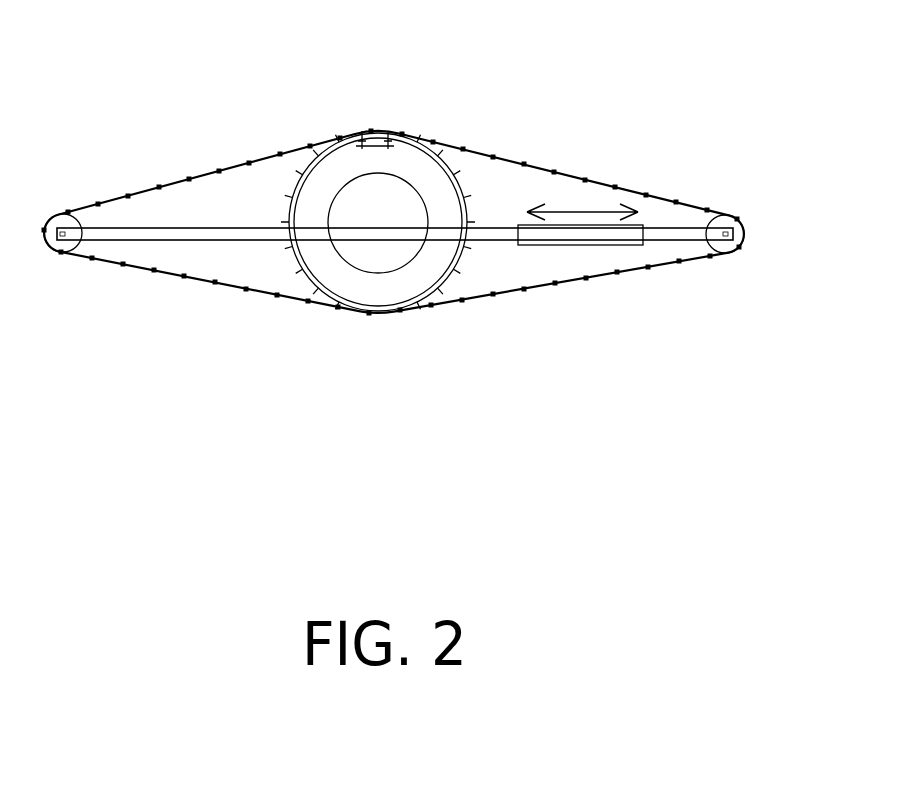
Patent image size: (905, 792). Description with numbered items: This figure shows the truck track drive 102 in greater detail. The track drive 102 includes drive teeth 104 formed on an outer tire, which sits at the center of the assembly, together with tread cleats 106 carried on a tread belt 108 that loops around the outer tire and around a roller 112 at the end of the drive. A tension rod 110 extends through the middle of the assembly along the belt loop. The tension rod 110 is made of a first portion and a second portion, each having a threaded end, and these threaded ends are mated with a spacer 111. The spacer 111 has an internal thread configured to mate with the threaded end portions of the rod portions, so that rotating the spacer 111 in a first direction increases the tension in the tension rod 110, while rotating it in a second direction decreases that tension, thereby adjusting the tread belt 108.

The track drive 102 is at (245, 110).
The drive teeth 104 is at (462, 188).
The tread cleats 106 is at (558, 165).
The tread belt 108 is at (690, 207).
The tension rod 110 is at (663, 233).
The spacer 111 is at (578, 236).
The roller 112 is at (744, 234).